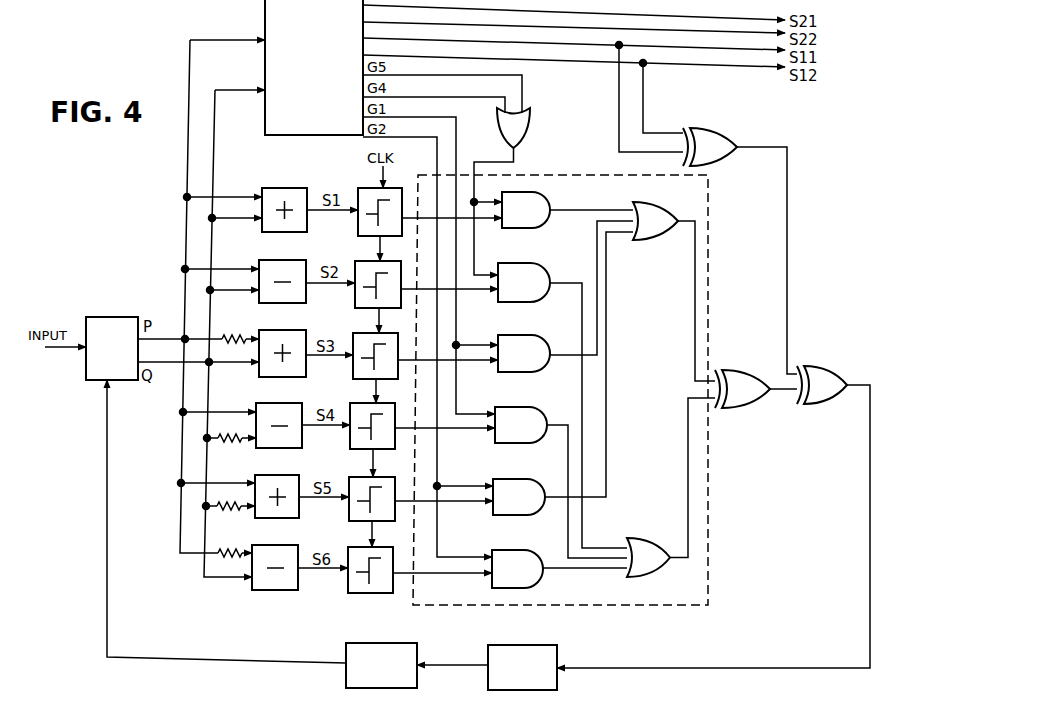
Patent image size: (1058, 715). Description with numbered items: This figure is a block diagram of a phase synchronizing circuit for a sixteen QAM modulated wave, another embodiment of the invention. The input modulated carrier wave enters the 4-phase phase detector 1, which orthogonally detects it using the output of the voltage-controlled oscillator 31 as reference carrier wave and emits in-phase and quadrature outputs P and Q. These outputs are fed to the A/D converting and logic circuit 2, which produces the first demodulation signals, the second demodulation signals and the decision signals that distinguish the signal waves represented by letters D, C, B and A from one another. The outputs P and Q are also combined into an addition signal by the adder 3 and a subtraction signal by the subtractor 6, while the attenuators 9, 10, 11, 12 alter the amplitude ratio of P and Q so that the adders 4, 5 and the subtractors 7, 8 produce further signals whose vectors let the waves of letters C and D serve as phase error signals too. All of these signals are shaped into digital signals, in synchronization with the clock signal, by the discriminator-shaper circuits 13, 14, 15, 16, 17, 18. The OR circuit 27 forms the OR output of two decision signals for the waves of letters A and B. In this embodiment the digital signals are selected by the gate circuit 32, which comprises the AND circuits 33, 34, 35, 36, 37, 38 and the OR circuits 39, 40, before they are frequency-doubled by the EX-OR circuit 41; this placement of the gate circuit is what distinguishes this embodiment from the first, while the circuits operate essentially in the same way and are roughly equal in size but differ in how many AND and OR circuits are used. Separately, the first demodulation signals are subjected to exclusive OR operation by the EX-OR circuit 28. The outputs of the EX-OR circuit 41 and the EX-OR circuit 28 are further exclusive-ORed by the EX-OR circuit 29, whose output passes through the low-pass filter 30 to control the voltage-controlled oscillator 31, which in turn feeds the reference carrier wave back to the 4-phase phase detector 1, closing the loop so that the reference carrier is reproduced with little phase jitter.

The 4-phase phase detector 1 is at (113, 317).
The A/D converting and logic circuit 2 is at (265, 16).
The adder 3 is at (286, 188).
The adder 4 is at (283, 328).
The adder 5 is at (283, 470).
The subtractor 6 is at (284, 256).
The subtractor 7 is at (279, 403).
The subtractor 8 is at (280, 545).
The attenuator 9 is at (234, 336).
The attenuator 10 is at (230, 443).
The attenuator 11 is at (229, 511).
The attenuator 12 is at (230, 558).
The discriminator-shaper circuit 13 is at (401, 188).
The discriminator-shaper circuit 14 is at (394, 263).
The discriminator-shaper circuit 15 is at (393, 338).
The discriminator-shaper circuit 16 is at (395, 406).
The discriminator-shaper circuit 17 is at (394, 479).
The discriminator-shaper circuit 18 is at (392, 548).
The OR circuit 27 is at (531, 123).
The EX-OR circuit 28 is at (727, 132).
The EX-OR circuit 29 is at (829, 368).
The low-pass filter 30 is at (518, 645).
The voltage-controlled oscillator 31 is at (407, 643).
The gate circuit 32 is at (550, 175).
The AND circuit 33 is at (553, 211).
The AND circuit 34 is at (544, 272).
The AND circuit 35 is at (544, 343).
The AND circuit 36 is at (543, 415).
The AND circuit 37 is at (535, 485).
The AND circuit 38 is at (535, 554).
The OR circuit 39 is at (655, 241).
The OR circuit 40 is at (653, 538).
The EX-OR circuit 41 is at (750, 370).